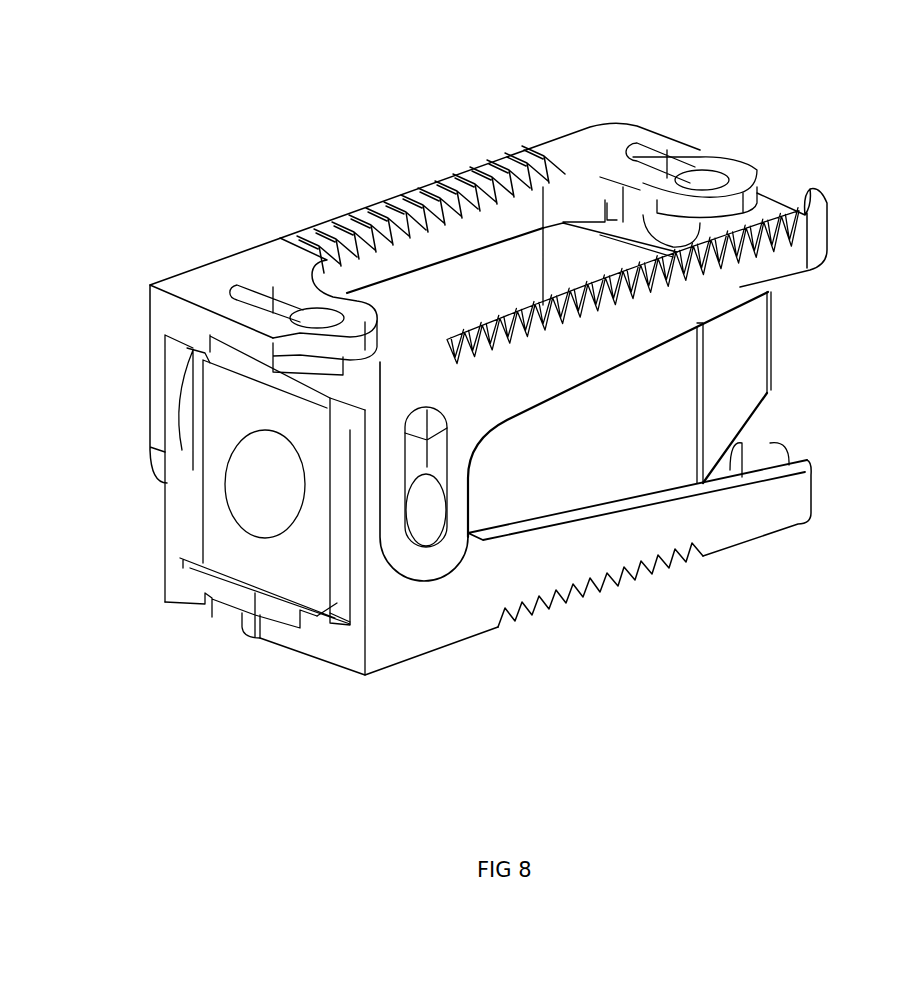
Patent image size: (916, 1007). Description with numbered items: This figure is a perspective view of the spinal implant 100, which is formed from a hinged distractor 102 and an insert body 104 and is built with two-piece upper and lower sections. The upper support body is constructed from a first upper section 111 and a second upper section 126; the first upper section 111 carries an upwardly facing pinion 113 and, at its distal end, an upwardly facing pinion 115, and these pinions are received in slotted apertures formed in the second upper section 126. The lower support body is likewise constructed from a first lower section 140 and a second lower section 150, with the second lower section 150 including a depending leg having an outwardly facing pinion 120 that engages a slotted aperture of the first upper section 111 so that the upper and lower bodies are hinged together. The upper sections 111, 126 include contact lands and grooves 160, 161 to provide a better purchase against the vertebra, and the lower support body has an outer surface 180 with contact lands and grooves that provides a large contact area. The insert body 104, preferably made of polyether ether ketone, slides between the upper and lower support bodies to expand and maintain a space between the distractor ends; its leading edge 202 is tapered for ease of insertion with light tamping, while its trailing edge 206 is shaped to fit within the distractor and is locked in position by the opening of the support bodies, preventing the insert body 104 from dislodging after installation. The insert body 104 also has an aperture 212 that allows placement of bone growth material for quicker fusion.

The implant 100 is at (392, 724).
The hinged distractor 102 is at (260, 637).
The insert body 104 is at (230, 545).
The first upper section 111 is at (657, 347).
The upwardly facing pinion 113 is at (313, 313).
The upwardly facing pinion 115 is at (705, 178).
The pinion 120 is at (430, 512).
The second upper section 126 is at (203, 267).
The first lower section 140 is at (165, 530).
The second lower section 150 is at (347, 670).
The contact lands and grooves 160 is at (768, 290).
The contact lands and grooves 161 is at (393, 200).
The outer surface 180 is at (650, 573).
The leading edge 202 is at (753, 420).
The trailing edge 206 is at (338, 593).
The aperture 212 is at (512, 228).